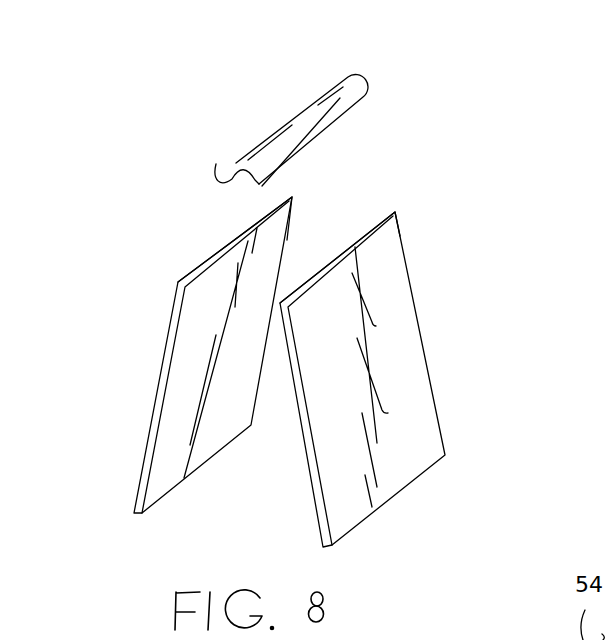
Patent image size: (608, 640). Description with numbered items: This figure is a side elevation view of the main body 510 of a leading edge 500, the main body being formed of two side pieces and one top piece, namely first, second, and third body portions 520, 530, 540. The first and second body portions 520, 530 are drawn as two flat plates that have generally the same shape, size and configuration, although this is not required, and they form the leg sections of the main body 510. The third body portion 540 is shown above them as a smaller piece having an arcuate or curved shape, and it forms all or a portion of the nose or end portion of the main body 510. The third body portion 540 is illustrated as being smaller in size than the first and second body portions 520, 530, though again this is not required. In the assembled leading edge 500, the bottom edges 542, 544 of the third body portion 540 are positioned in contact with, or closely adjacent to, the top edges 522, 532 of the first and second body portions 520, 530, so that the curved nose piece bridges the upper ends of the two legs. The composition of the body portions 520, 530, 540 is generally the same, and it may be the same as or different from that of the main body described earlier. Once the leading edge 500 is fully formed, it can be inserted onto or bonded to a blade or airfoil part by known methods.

The leading edge 500 is at (482, 233).
The main body 510 is at (205, 132).
The first body portion 520 is at (410, 353).
The top edge of first body portion 522 is at (395, 212).
The second body portion 530 is at (158, 384).
The top edge of second body portion 532 is at (293, 198).
The third body portion 540 is at (327, 100).
The bottom edge of third body portion 542 is at (264, 187).
The bottom edge of third body portion 544 is at (237, 159).